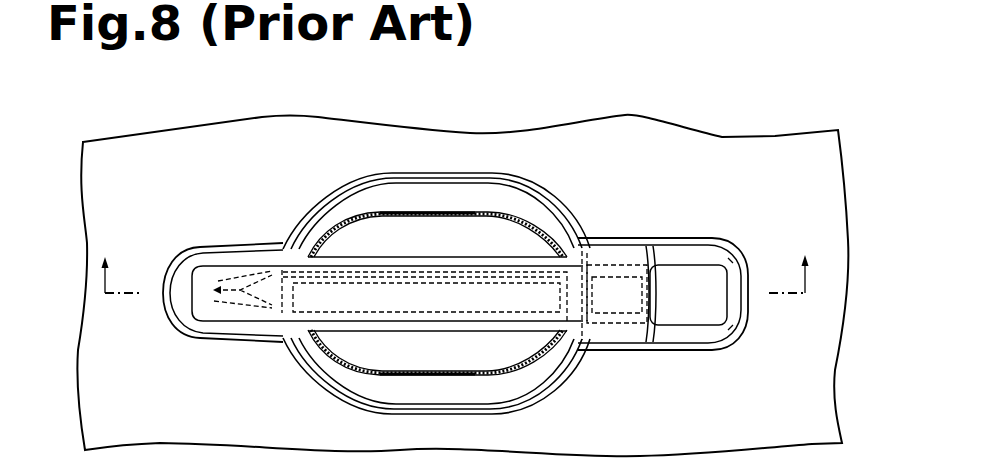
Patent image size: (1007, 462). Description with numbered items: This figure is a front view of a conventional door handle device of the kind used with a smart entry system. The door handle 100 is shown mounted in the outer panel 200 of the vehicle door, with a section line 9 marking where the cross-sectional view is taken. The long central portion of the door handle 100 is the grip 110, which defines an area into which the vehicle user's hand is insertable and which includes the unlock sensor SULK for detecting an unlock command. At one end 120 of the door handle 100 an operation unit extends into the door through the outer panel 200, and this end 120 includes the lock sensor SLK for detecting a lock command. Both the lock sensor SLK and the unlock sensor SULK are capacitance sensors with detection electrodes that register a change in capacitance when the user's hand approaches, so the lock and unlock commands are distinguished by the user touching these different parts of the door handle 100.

The door handle 100 is at (510, 248).
The grip 110 is at (387, 257).
The end 120 is at (617, 333).
The outer panel 200 is at (762, 155).
The line 9- 9 is at (455, 258).
The lock sensor SLK is at (615, 267).
The unlock sensor SULK is at (513, 313).